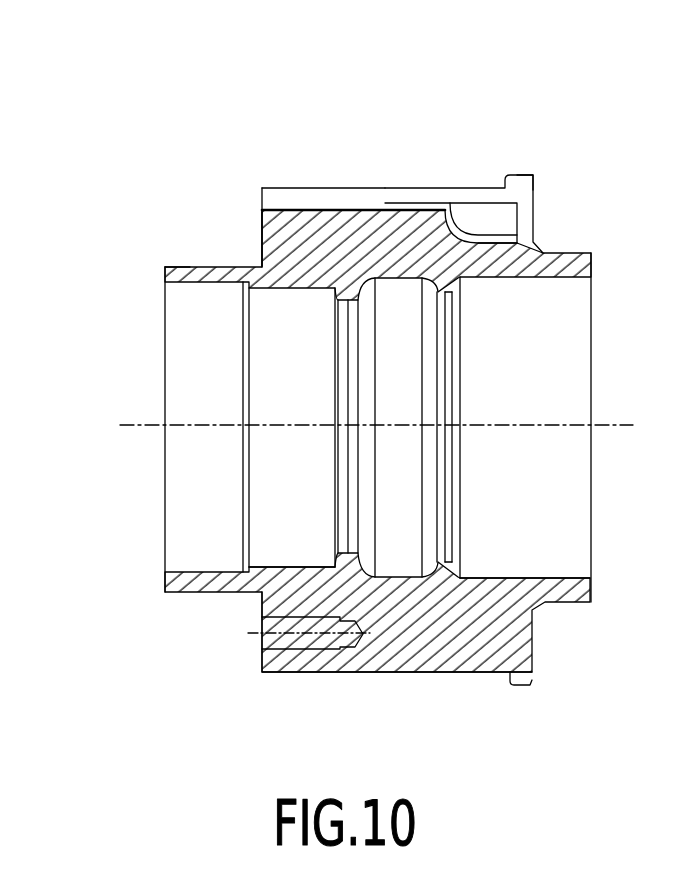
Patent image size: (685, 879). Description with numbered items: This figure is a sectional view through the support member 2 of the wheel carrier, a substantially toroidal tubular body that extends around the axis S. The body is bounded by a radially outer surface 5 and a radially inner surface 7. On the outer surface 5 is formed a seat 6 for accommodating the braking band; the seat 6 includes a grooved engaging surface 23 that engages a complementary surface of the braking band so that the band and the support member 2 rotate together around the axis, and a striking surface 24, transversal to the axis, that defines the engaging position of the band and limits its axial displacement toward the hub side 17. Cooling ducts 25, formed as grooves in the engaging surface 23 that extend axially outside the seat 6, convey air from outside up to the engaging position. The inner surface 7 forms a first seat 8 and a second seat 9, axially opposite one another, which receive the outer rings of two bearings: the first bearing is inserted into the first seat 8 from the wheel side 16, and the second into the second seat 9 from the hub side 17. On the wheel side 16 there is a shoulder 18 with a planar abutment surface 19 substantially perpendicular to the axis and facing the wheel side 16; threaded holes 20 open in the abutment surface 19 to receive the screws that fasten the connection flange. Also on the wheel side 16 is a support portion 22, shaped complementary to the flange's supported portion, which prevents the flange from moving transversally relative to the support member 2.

The support member 2 is at (347, 128).
The radially outer surface 5 is at (386, 205).
The seat 6 is at (297, 207).
The radially inner surface 7 is at (520, 282).
The first seat 8 is at (288, 563).
The second seat 9 is at (505, 573).
The wheel side 16 is at (95, 408).
The hub side 17 is at (678, 403).
The shoulder 18 is at (262, 222).
The abutment surface 19 is at (262, 247).
The threaded holes 20 is at (290, 638).
The support portion 22 is at (163, 270).
The engaging surface 23 is at (447, 205).
The striking surface 24 is at (506, 179).
The cooling ducts 25 is at (497, 216).